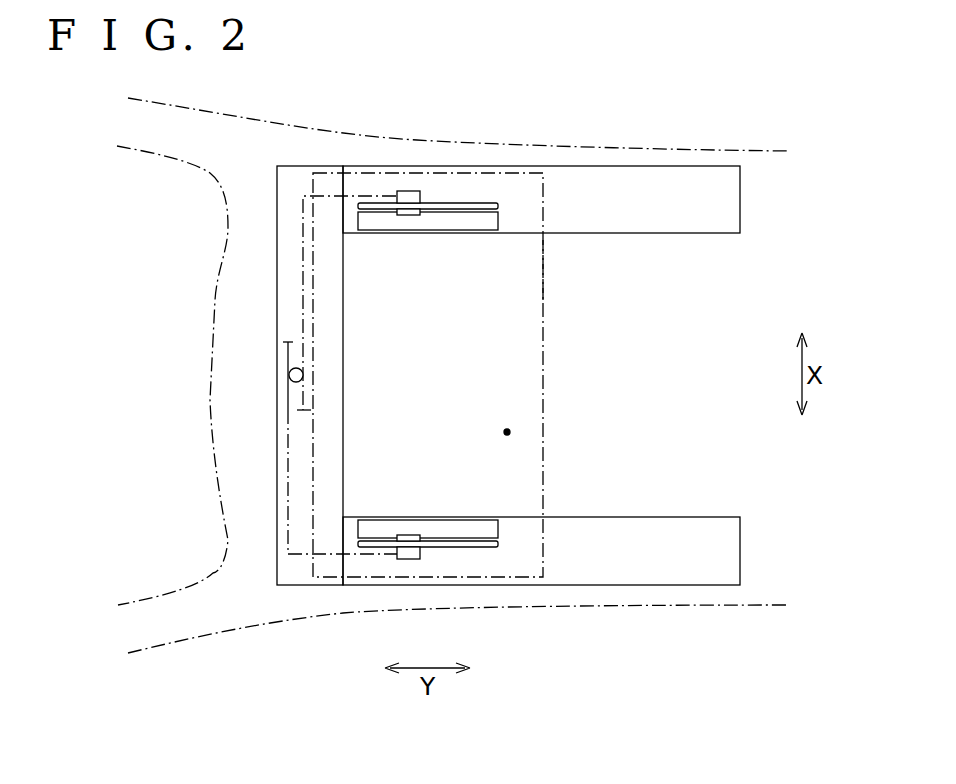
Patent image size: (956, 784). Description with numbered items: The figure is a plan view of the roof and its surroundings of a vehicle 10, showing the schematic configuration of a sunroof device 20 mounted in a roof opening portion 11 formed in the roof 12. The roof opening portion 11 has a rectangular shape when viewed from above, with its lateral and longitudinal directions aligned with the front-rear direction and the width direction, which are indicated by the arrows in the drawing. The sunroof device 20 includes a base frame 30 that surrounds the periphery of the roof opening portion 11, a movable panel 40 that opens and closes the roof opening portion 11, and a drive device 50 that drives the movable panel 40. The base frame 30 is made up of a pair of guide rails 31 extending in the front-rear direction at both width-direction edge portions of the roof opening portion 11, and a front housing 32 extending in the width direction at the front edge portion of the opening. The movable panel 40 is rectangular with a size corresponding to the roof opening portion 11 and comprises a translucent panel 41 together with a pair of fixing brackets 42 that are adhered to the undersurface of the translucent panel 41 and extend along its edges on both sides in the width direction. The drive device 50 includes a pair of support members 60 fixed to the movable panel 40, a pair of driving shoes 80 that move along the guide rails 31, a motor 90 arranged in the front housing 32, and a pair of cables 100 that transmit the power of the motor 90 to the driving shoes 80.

The vehicle 10 is at (459, 331).
The roof opening portion 11 is at (507, 432).
The roof 12 is at (540, 607).
The sunroof device 20 is at (546, 327).
The base frame 30 is at (488, 375).
The guide rails 31 is at (741, 198).
The front housing 32 is at (277, 247).
The movable panel 40 is at (502, 375).
The translucent panel 41 is at (545, 265).
The fixing brackets 42 is at (498, 222).
The drive device 50 is at (413, 190).
The support members 60 is at (468, 222).
The driving shoes 80 is at (413, 215).
The motor 90 is at (291, 381).
The cables 100 is at (302, 298).